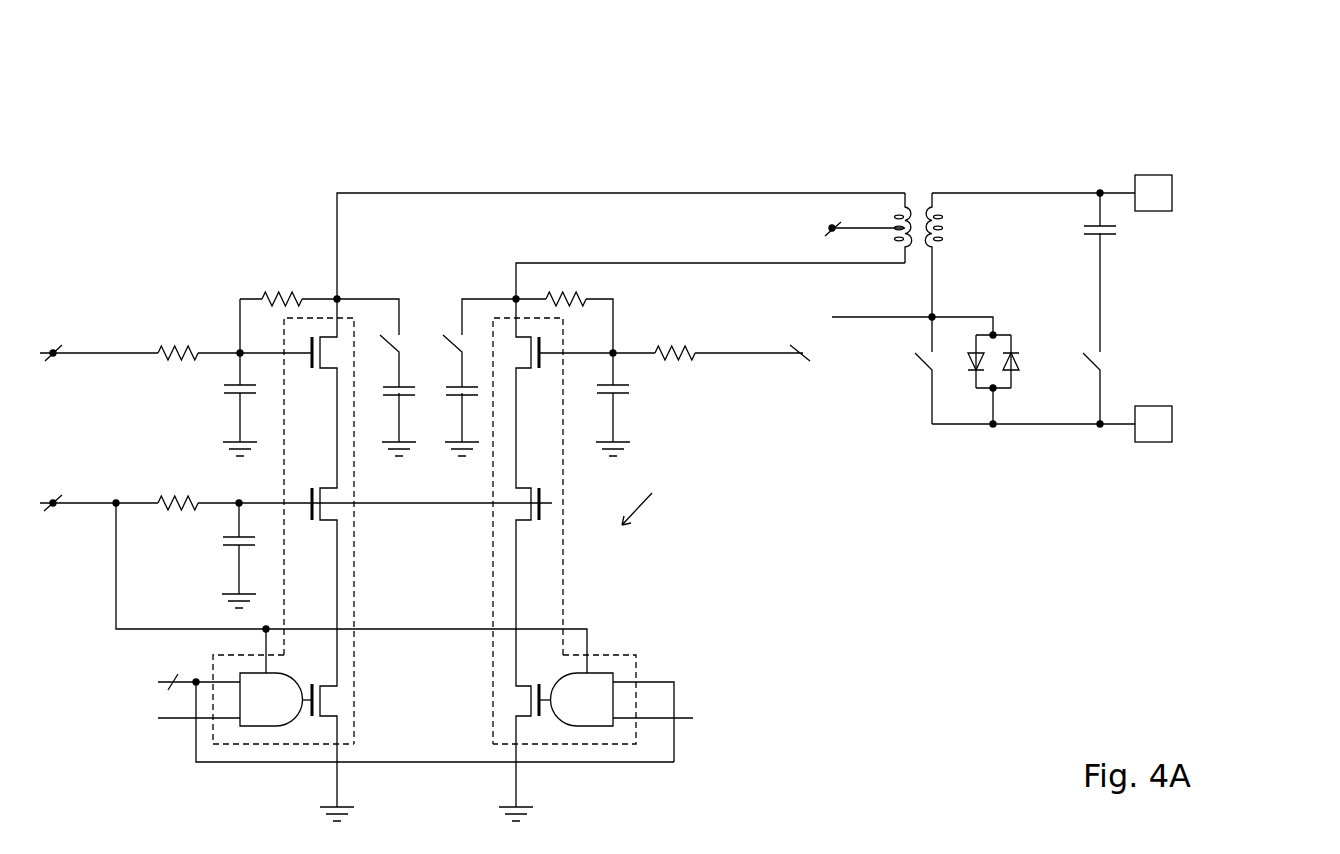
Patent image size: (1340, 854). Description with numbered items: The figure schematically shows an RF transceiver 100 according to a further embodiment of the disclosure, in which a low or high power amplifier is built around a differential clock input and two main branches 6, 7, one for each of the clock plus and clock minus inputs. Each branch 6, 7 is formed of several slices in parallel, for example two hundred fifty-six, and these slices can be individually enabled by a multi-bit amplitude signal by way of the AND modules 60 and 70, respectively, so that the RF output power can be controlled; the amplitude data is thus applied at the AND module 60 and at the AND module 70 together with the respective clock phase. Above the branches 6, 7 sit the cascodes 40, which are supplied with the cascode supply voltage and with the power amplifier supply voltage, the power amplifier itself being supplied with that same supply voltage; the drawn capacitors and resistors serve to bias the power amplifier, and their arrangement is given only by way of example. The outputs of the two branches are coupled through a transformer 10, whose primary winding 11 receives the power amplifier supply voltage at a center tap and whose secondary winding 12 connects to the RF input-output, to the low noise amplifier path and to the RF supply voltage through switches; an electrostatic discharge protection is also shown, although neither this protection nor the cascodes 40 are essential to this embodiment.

The RF transceiver 100 is at (1246, 150).
The transformer 10 is at (918, 183).
The primary winding 11 is at (898, 239).
The secondary winding 12 is at (940, 228).
The cascodes 40 is at (350, 425).
The main branch 6 is at (355, 587).
The main branch 7 is at (565, 585).
The AND module 60 is at (277, 717).
The AND module 70 is at (605, 680).